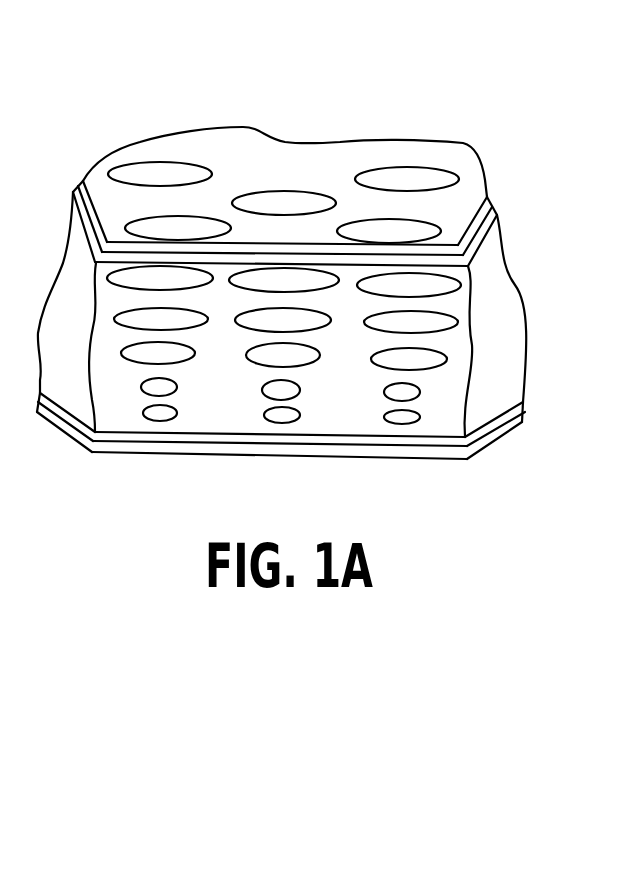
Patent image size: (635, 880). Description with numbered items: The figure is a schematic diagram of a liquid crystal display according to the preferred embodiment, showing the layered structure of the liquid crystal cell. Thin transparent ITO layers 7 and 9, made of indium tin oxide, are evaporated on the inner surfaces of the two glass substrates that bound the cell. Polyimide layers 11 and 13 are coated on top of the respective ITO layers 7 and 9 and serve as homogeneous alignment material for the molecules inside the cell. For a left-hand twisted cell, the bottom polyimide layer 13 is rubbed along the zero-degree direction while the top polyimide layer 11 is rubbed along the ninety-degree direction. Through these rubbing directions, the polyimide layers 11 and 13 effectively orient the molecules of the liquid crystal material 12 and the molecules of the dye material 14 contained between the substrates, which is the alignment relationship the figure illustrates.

The ITO layer 7 is at (487, 197).
The polyimide layer 11 is at (493, 210).
The polyimide layer 13 is at (523, 401).
The ITO layer 9 is at (520, 423).
The liquid crystal material 12 is at (407, 177).
The dye material 14 is at (172, 175).